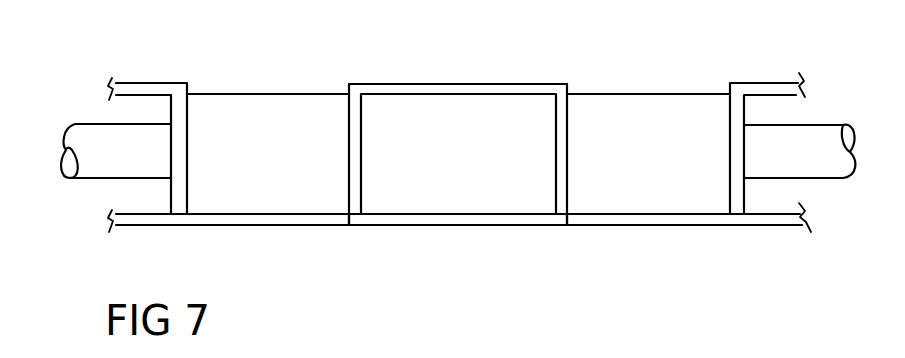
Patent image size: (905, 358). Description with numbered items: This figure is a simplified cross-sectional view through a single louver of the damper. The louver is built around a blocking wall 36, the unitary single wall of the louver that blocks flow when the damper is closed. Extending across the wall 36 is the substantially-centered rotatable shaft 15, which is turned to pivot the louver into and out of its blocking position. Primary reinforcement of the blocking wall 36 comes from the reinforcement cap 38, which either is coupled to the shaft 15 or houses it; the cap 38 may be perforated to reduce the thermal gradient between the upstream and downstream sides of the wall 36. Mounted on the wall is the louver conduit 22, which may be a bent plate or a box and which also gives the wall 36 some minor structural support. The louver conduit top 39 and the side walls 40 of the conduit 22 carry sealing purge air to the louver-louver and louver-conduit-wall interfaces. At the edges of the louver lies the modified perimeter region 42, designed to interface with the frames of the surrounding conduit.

The rotatable shaft 15 is at (77, 124).
The louver conduit 22 is at (472, 165).
The blocking wall 36 is at (669, 225).
The reinforcement cap 38 is at (267, 94).
The louver conduit top 39 is at (437, 84).
The side walls 40 is at (348, 175).
The modified perimeter region 42 is at (155, 83).